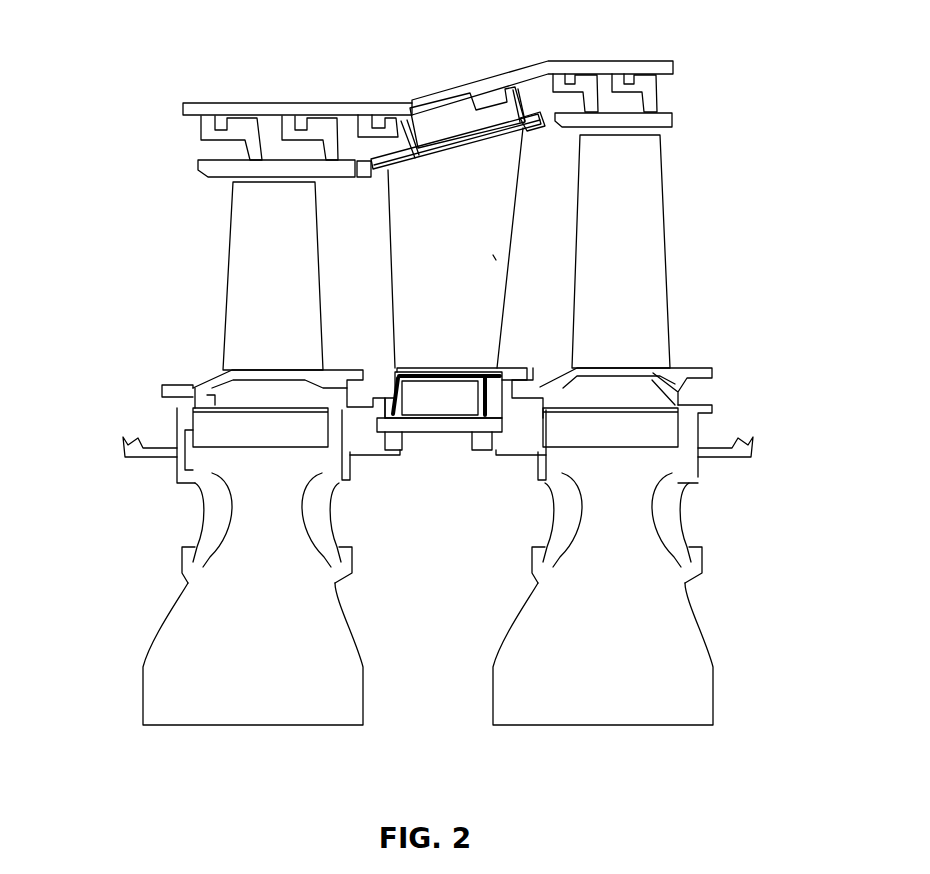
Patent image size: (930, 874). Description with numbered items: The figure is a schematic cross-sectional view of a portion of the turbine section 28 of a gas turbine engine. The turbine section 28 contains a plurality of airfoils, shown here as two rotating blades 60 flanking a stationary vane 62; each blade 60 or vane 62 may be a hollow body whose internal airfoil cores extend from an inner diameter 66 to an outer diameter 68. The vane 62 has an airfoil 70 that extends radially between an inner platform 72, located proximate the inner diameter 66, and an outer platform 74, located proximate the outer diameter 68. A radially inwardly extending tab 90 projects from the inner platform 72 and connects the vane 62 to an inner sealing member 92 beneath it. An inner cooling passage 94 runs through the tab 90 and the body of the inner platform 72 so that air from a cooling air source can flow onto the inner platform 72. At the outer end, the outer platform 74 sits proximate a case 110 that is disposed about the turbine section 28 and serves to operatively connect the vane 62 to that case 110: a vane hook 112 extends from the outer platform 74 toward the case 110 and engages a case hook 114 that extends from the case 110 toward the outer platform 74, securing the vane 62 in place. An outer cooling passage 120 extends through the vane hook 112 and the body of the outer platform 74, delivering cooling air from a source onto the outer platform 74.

The turbine section 28 is at (117, 60).
The blade 60 is at (290, 276).
The vane 62 is at (483, 204).
The inner diameter 66 is at (385, 361).
The outer diameter 68 is at (212, 193).
The airfoil 70 is at (498, 260).
The inner platform 72 is at (517, 376).
The outer platform 74 is at (366, 178).
The radially inwardly extending tab 90 is at (405, 410).
The inner sealing member 92 is at (413, 422).
The inner cooling passage 94 is at (452, 372).
The case 110 is at (440, 90).
The vane hook 112 is at (410, 108).
The case hook 114 is at (368, 124).
The outer cooling passage 120 is at (458, 150).